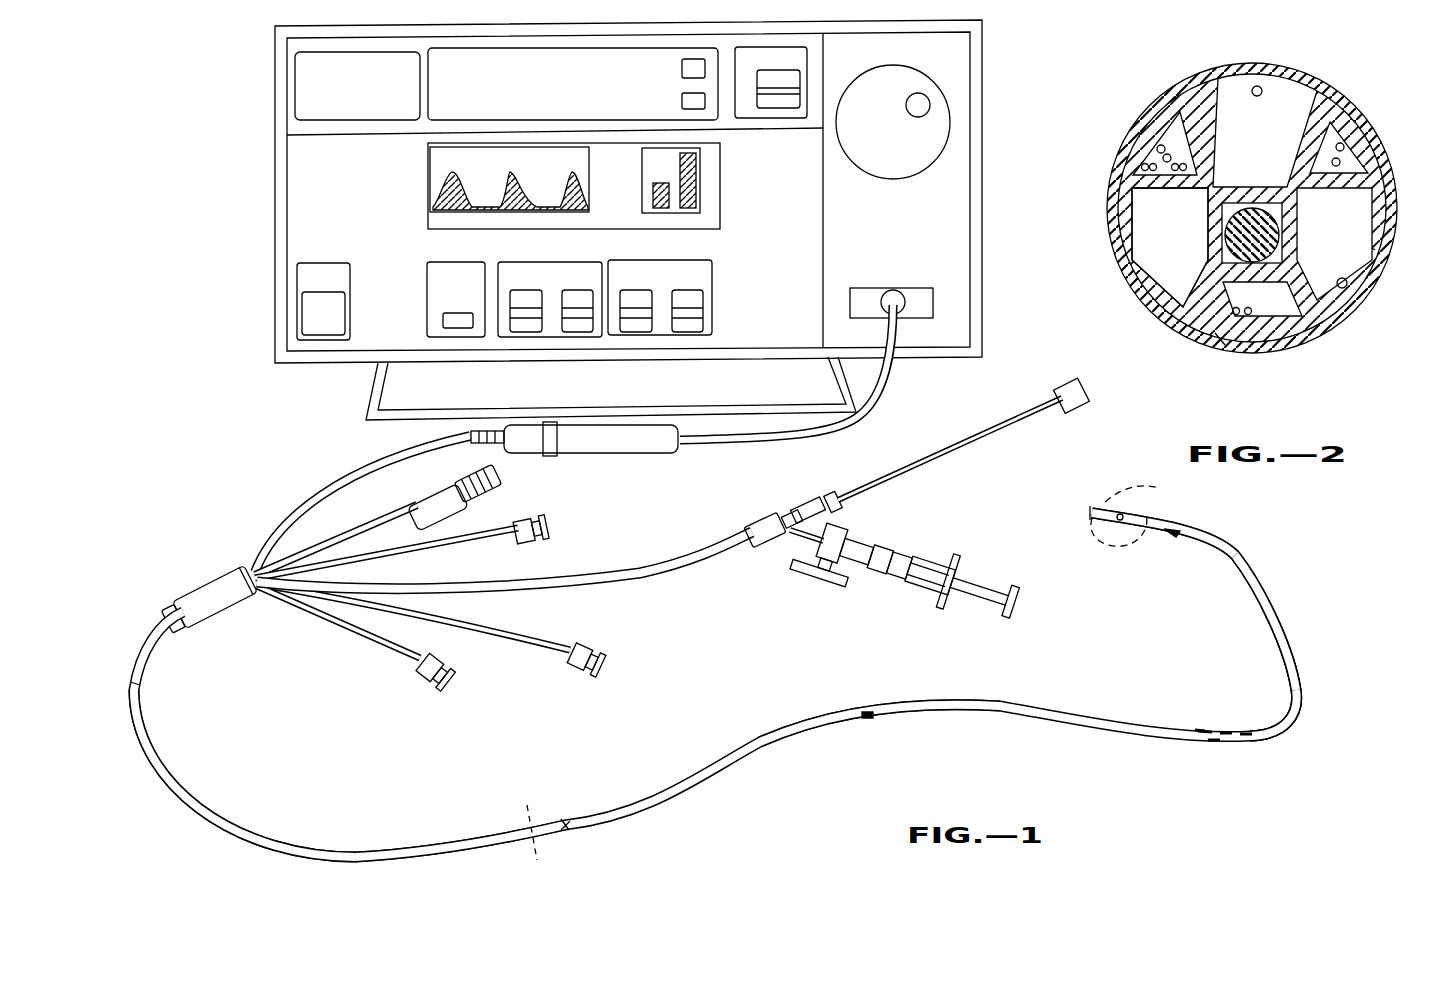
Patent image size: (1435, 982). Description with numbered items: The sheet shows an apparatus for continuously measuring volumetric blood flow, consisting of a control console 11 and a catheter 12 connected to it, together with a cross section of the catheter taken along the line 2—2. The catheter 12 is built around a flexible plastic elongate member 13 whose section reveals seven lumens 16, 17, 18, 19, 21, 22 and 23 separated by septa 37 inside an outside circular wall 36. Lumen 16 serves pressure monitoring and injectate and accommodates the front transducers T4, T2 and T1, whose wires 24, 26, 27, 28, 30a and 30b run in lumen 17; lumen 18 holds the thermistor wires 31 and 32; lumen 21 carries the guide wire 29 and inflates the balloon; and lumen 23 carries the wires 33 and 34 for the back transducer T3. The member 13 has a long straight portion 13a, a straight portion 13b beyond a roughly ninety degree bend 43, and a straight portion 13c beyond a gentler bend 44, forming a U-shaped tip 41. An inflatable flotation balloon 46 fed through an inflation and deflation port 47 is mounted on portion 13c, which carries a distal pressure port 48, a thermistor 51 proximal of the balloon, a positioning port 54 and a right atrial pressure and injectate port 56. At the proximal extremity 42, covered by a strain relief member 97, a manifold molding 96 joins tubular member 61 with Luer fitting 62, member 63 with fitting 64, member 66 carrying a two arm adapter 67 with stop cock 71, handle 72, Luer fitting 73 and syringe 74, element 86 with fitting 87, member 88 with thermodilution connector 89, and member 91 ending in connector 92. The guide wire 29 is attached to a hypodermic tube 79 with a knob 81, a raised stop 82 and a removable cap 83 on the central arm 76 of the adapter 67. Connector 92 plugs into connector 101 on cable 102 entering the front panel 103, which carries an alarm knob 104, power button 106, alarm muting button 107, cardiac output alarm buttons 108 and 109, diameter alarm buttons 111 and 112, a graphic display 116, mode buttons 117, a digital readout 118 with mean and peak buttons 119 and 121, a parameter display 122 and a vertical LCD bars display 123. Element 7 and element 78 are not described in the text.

In FIG. 1, the section line 2— 2 is at (524, 805).
In FIG. 2, the catheter body 7 is at (1132, 257).
In FIG. 1, the control console 11 is at (1022, 297).
In FIG. 1, the catheter 12 is at (196, 560).
In FIG. 1, the flexible elongate member 13 is at (611, 805).
In FIG. 2, the flexible elongate member 13 is at (1402, 188).
In FIG. 1, the substantially straight flexible portion 13a is at (405, 848).
In FIG. 1, the relatively straight portion 13b is at (1292, 680).
In FIG. 1, the generally straight portion 13c is at (1162, 525).
In FIG. 2, the lumen 16 is at (1259, 86).
In FIG. 2, the lumen 17 is at (1135, 262).
In FIG. 2, the lumen 18 is at (1325, 125).
In FIG. 2, the lumen 19 is at (1225, 262).
In FIG. 2, the lumen 21 is at (1208, 295).
In FIG. 2, the lumen 22 is at (1346, 300).
In FIG. 2, the lumen 23 is at (1285, 322).
In FIG. 2, the wire 24 is at (1160, 154).
In FIG. 2, the wire 26 is at (1165, 154).
In FIG. 2, the wire 27 is at (1147, 170).
In FIG. 2, the wire 28 is at (1146, 163).
In FIG. 1, the guide wire 29 is at (565, 820).
In FIG. 2, the guide wire 29 is at (1218, 340).
In FIG. 2, the wire 30a is at (1170, 200).
In FIG. 2, the wire 30b is at (1136, 247).
In FIG. 2, the thermistor wire 31 is at (1341, 143).
In FIG. 2, the thermistor wire 32 is at (1340, 159).
In FIG. 2, the wire 33 is at (1235, 316).
In FIG. 2, the wire 34 is at (1248, 316).
In FIG. 2, the outside circular wall 36 is at (1374, 255).
In FIG. 2, the septa 37 is at (1320, 200).
In FIG. 1, the distal extremity or tip 41 is at (1213, 582).
In FIG. 1, the proximal extremity 42 is at (140, 688).
In FIG. 1, the bend 43 is at (1290, 722).
In FIG. 1, the bend 44 is at (1262, 580).
In FIG. 1, the inflatable flotation balloon 46 is at (1121, 492).
In FIG. 1, the inflation and deflation port 47 is at (1128, 500).
In FIG. 1, the distal pressure port 48 is at (1091, 503).
In FIG. 1, the thermistor 51 is at (1162, 537).
In FIG. 1, the positioning port 54 is at (1203, 732).
In FIG. 1, the right atrial pressure port and injectate port 56 is at (867, 720).
In FIG. 1, the elongate flexible member 61 is at (368, 622).
In FIG. 1, the Luer-type fitting 62 is at (420, 692).
In FIG. 1, the elongate flexible tubular member 63 is at (508, 632).
In FIG. 1, the Luer-type fitting 64 is at (600, 652).
In FIG. 1, the flexible elongate member 66 is at (640, 572).
In FIG. 1, the two arm adapter 67 is at (747, 572).
In FIG. 1, the stop cock 71 is at (845, 524).
In FIG. 1, the handle 72 is at (797, 568).
In FIG. 1, the Luer-type fitting 73 is at (862, 540).
In FIG. 1, the syringe 74 is at (905, 578).
In FIG. 1, the central arm 76 is at (755, 527).
In FIG. 1, the connector 78 is at (793, 514).
In FIG. 1, the hypodermic tube 79 is at (962, 448).
In FIG. 1, the knob 81 is at (1085, 390).
In FIG. 1, the raised section 82 is at (812, 500).
In FIG. 1, the removable cap 83 is at (838, 494).
In FIG. 1, the flexible elongate element 86 is at (433, 543).
In FIG. 1, the Luer-type fitting 87 is at (532, 541).
In FIG. 1, the flexible elongate tubular member 88 is at (322, 536).
In FIG. 1, the thermodilution connector 89 is at (490, 505).
In FIG. 1, the flexible elongate member 91 is at (372, 460).
In FIG. 1, the connector 92 is at (478, 455).
In FIG. 1, the manifold molding 96 is at (232, 597).
In FIG. 1, the strain relief and reinforcing member 97 is at (165, 625).
In FIG. 1, the connector 101 is at (600, 488).
In FIG. 1, the cable 102 is at (895, 372).
In FIG. 1, the front panel 103 is at (948, 208).
In FIG. 1, the knob 104 is at (935, 138).
In FIG. 1, the "power on" push button 106 is at (327, 300).
In FIG. 1, the alarm muting push button 107 is at (450, 320).
In FIG. 1, the push button 108 is at (518, 300).
In FIG. 1, the push button 109 is at (575, 300).
In FIG. 1, the push button 111 is at (637, 300).
In FIG. 1, the push button 112 is at (690, 302).
In FIG. 1, the graphic display 116 is at (435, 165).
In FIG. 1, the mode push buttons 117 is at (800, 80).
In FIG. 1, the digital readout 118 is at (577, 103).
In FIG. 1, the push button 119 is at (683, 68).
In FIG. 1, the push button 121 is at (708, 105).
In FIG. 1, the digital display 122 is at (302, 92).
In FIG. 1, the vertical LCD bars display 123 is at (703, 180).
In FIG. 1, the proximal transducer T1 is at (1246, 733).
In FIG. 1, the intermediate transducer T2 is at (1226, 733).
In FIG. 1, the back transducer T3 is at (1213, 744).
In FIG. 1, the distal transducer T4 is at (1204, 731).